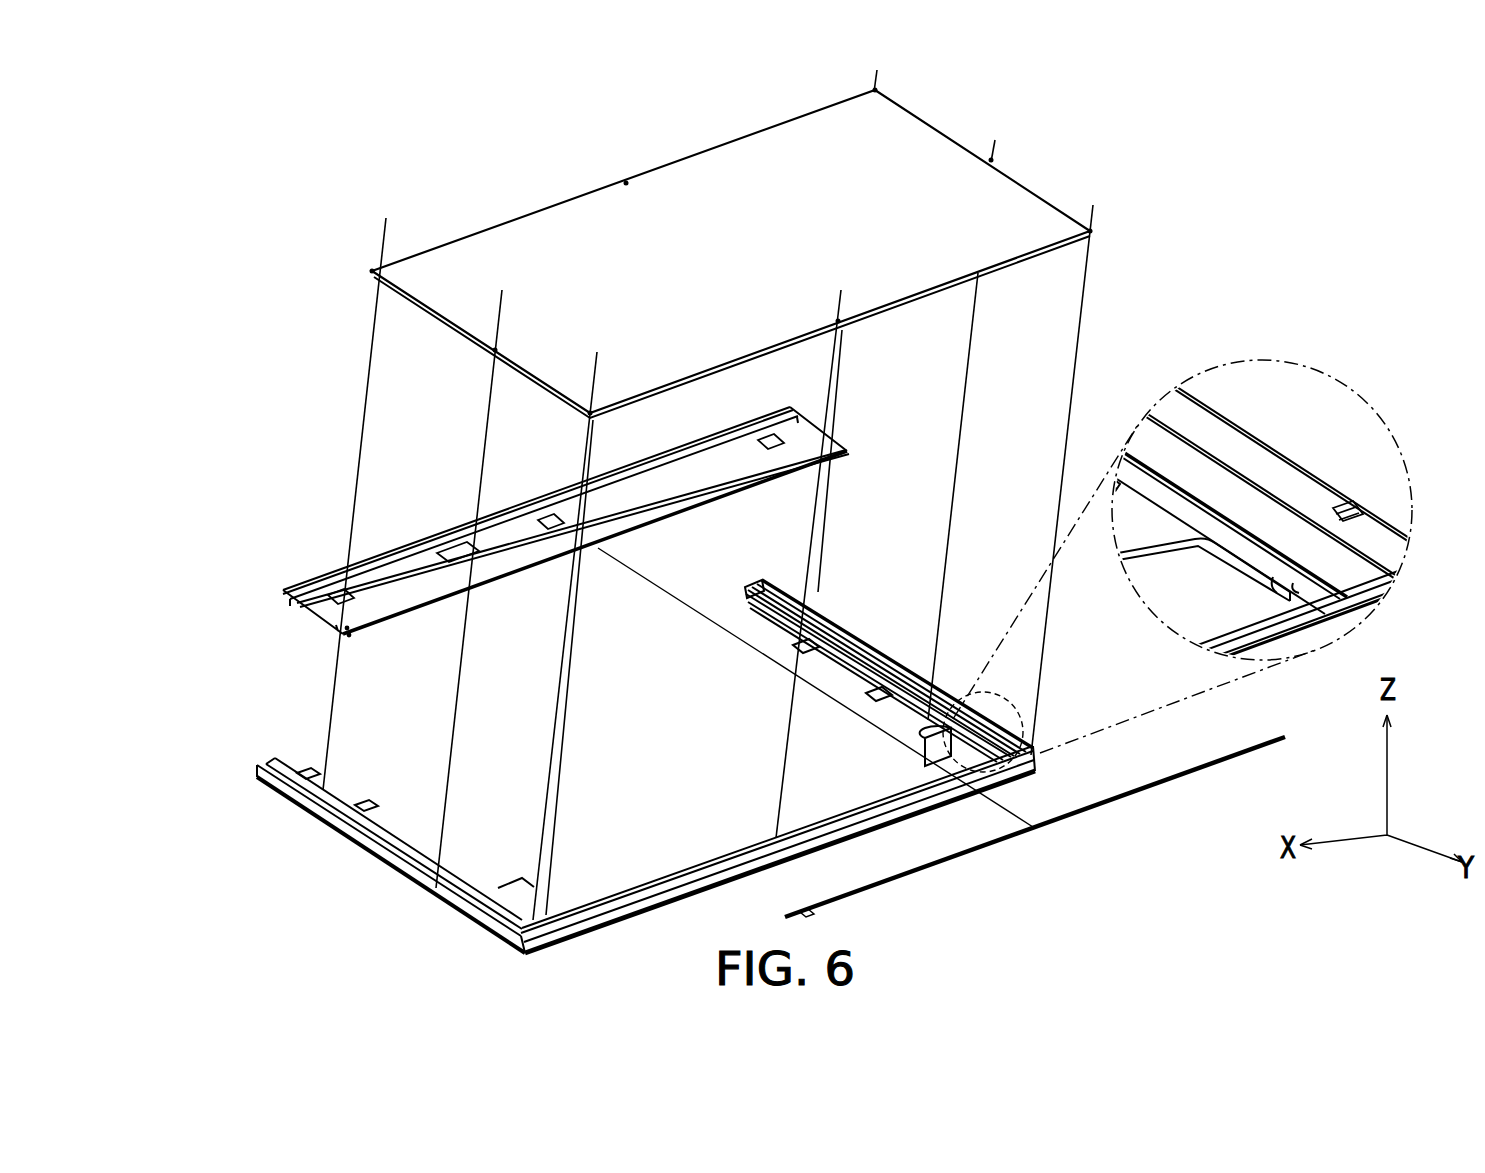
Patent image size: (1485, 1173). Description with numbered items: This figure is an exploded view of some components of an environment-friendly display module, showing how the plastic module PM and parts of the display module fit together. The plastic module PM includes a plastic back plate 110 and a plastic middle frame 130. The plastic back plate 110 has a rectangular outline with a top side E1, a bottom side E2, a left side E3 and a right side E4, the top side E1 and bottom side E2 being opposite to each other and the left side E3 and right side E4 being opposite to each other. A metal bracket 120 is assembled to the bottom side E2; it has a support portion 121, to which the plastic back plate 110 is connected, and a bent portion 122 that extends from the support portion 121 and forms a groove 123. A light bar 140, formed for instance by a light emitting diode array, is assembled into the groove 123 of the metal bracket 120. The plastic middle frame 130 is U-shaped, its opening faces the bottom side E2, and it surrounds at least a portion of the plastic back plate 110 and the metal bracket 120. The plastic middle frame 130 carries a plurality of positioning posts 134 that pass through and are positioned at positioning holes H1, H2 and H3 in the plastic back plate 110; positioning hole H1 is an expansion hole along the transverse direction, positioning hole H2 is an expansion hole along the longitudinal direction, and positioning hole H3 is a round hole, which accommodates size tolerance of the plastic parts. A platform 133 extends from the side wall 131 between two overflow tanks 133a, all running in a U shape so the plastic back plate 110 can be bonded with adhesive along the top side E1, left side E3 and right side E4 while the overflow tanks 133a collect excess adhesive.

The plastic back plate 110 is at (1190, 222).
The metal bracket 120 is at (262, 570).
The support portion 121 is at (530, 565).
The bent portion 122 is at (538, 514).
The groove 123 is at (636, 470).
The plastic middle frame 130 is at (258, 830).
The side wall 131 is at (1392, 517).
The platform 133 is at (1232, 487).
The overflow tanks 133a is at (1310, 510).
The positioning posts 134 is at (882, 660).
The light bar 140 is at (1250, 755).
The plastic module PM is at (158, 92).
The top side E1 is at (900, 310).
The bottom side E2 is at (612, 183).
The left side E3 is at (1040, 188).
The right side E4 is at (435, 324).
The positioning hole H1 is at (880, 92).
The positioning hole H2 is at (990, 158).
The positioning hole H3 is at (624, 190).